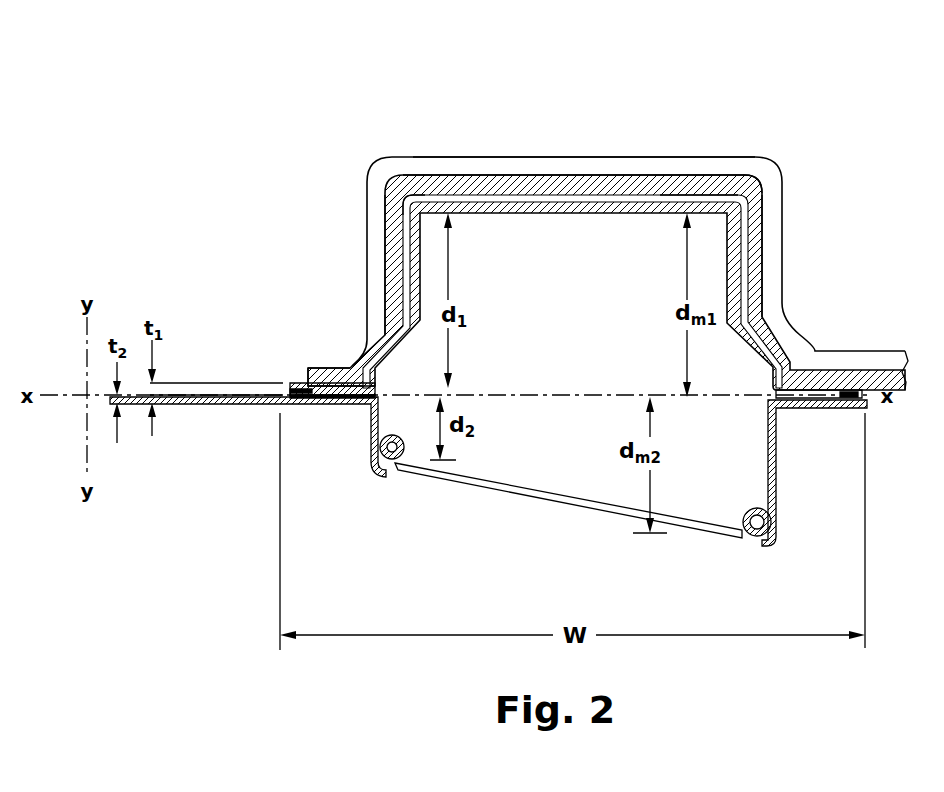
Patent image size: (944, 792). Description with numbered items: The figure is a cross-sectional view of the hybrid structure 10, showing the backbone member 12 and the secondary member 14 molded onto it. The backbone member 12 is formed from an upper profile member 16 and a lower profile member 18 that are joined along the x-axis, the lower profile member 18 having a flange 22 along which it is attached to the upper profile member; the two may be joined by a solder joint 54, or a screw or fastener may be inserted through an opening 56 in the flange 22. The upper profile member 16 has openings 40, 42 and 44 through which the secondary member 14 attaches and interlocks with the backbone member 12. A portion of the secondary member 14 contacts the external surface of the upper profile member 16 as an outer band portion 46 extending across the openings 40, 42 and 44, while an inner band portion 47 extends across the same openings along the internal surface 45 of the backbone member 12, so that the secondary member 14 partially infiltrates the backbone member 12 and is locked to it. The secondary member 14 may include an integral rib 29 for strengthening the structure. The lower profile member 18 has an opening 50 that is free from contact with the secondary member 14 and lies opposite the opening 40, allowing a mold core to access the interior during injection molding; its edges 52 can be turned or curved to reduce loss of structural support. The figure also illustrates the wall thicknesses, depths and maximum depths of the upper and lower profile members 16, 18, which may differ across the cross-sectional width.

The hybrid structure 10 is at (457, 79).
The backbone member 12 is at (322, 344).
The secondary member 14 is at (402, 187).
The upper profile member 16 is at (436, 197).
The lower profile member 18 is at (757, 541).
The flange 22 is at (360, 406).
The rib 29 is at (375, 213).
The opening 40 is at (583, 193).
The opening 42 is at (750, 258).
The opening 44 is at (407, 265).
The internal surface 45 is at (410, 228).
The outer band portion 46 is at (717, 182).
The inner band portion 47 is at (673, 207).
The opening 50 is at (590, 508).
The edges 52 is at (400, 470).
The solder joint 54 is at (282, 396).
The opening 56 is at (320, 407).